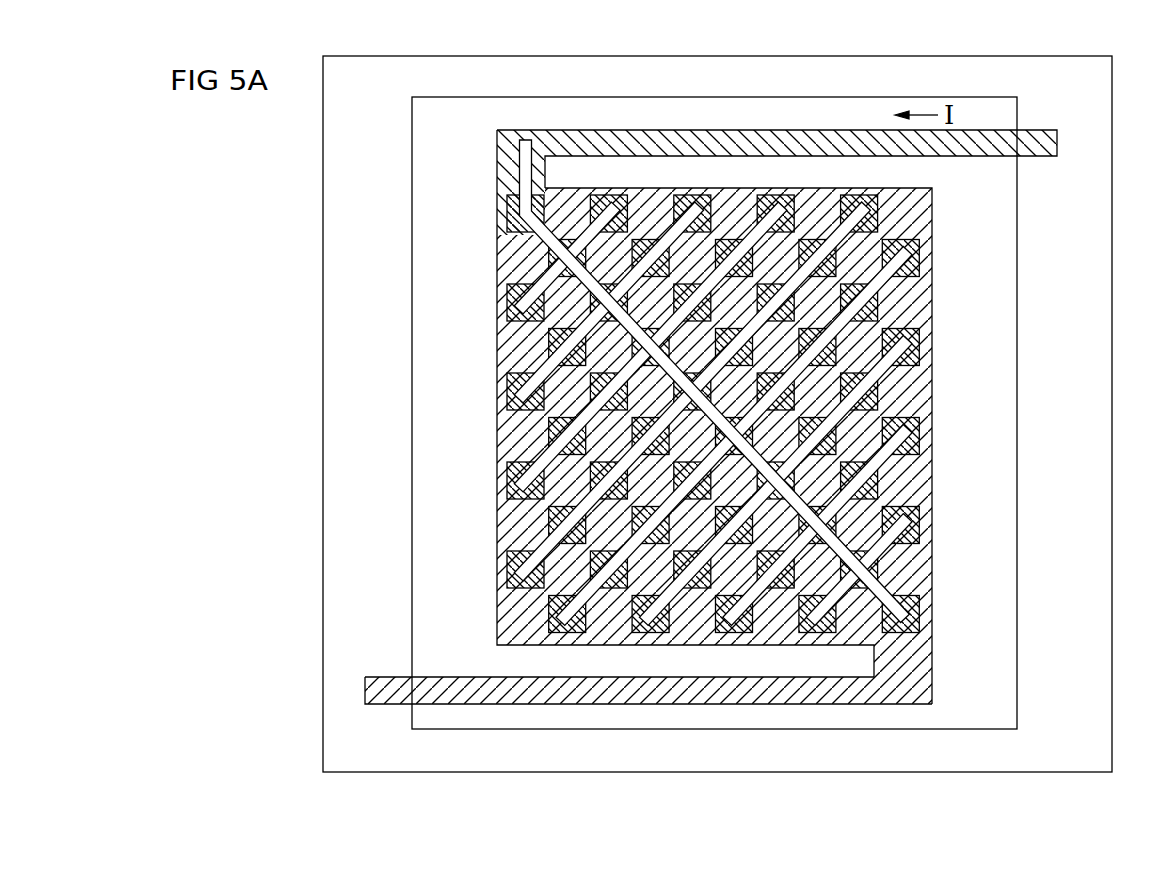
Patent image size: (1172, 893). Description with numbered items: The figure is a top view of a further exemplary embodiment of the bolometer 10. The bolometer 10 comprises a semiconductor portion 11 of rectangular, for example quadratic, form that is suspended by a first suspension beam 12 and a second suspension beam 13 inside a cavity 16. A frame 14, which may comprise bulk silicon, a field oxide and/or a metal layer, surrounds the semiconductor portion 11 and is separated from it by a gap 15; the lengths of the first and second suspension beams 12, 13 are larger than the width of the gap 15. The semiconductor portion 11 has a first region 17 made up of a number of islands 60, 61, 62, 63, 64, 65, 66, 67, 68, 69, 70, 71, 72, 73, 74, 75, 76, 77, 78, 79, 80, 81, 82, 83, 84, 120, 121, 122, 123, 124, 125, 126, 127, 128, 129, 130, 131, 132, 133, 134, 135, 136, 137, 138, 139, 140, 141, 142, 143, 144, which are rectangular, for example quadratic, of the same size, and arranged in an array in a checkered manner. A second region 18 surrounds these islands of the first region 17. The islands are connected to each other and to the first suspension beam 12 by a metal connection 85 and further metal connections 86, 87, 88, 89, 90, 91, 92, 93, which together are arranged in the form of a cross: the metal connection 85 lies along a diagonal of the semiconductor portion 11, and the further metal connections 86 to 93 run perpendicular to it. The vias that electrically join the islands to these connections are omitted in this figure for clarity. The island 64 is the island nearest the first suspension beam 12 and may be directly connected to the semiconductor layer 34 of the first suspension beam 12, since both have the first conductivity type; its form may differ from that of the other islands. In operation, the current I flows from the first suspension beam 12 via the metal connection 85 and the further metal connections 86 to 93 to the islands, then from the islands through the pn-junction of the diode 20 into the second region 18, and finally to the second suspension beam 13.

The bolometer 10 is at (310, 232).
The semiconductor portion 11 is at (486, 347).
The first suspension beam 12 is at (806, 128).
The second suspension beam 13 is at (804, 705).
The frame 14 is at (322, 428).
The gap 15 is at (412, 300).
The cavity 16 is at (1098, 282).
The first region 17 is at (512, 297).
The second region 18 is at (932, 304).
The diode 20 is at (546, 186).
The semiconductor layer 34 is at (989, 156).
The metal connection 85 is at (518, 214).
The further metal connection 86 is at (624, 223).
The further metal connection 87 is at (707, 223).
The further metal connection 88 is at (795, 223).
The further metal connection 89 is at (877, 223).
The further metal connection 90 is at (921, 264).
The further metal connection 91 is at (921, 352).
The further metal connection 92 is at (921, 440).
The further metal connection 93 is at (921, 527).
The island 60 is at (525, 591).
The island 61 is at (525, 502).
The island 62 is at (525, 413).
The island 63 is at (525, 324).
The island 64 is at (525, 235).
The island 65 is at (571, 635).
The island 66 is at (573, 546).
The island 67 is at (573, 457).
The island 68 is at (573, 368).
The island 69 is at (573, 279).
The island 70 is at (615, 591).
The island 71 is at (615, 502).
The island 72 is at (615, 413).
The island 73 is at (615, 324).
The island 74 is at (615, 235).
The island 75 is at (657, 635).
The island 76 is at (657, 546).
The island 77 is at (657, 457).
The island 78 is at (657, 368).
The island 79 is at (657, 279).
The island 80 is at (698, 591).
The island 81 is at (698, 502).
The island 82 is at (698, 413).
The island 83 is at (698, 324).
The island 84 is at (698, 235).
The island 120 is at (740, 635).
The island 121 is at (740, 546).
The island 122 is at (740, 457).
The island 123 is at (740, 368).
The island 124 is at (740, 279).
The island 125 is at (782, 591).
The island 126 is at (782, 502).
The island 127 is at (782, 413).
The island 128 is at (782, 324).
The island 129 is at (782, 235).
The island 130 is at (817, 635).
The island 131 is at (823, 546).
The island 132 is at (823, 457).
The island 133 is at (823, 368).
The island 134 is at (823, 279).
The island 135 is at (865, 591).
The island 136 is at (865, 502).
The island 137 is at (865, 413).
The island 138 is at (865, 324).
The island 139 is at (865, 235).
The island 140 is at (907, 635).
The island 141 is at (907, 546).
The island 142 is at (907, 457).
The island 143 is at (907, 368).
The island 144 is at (907, 279).